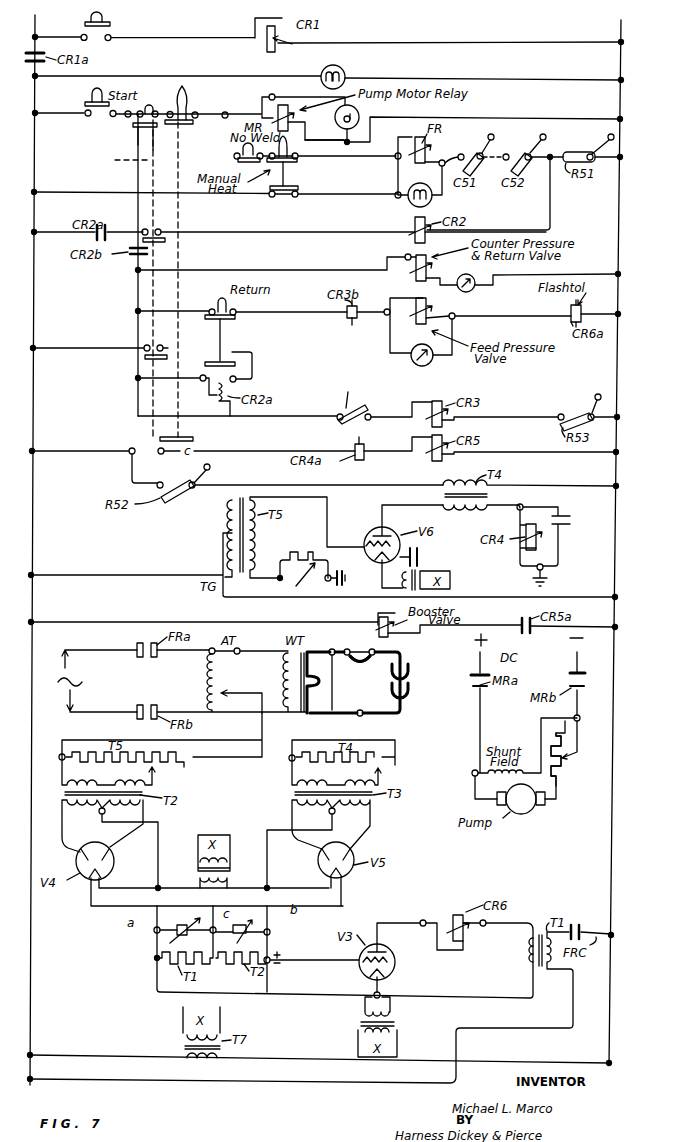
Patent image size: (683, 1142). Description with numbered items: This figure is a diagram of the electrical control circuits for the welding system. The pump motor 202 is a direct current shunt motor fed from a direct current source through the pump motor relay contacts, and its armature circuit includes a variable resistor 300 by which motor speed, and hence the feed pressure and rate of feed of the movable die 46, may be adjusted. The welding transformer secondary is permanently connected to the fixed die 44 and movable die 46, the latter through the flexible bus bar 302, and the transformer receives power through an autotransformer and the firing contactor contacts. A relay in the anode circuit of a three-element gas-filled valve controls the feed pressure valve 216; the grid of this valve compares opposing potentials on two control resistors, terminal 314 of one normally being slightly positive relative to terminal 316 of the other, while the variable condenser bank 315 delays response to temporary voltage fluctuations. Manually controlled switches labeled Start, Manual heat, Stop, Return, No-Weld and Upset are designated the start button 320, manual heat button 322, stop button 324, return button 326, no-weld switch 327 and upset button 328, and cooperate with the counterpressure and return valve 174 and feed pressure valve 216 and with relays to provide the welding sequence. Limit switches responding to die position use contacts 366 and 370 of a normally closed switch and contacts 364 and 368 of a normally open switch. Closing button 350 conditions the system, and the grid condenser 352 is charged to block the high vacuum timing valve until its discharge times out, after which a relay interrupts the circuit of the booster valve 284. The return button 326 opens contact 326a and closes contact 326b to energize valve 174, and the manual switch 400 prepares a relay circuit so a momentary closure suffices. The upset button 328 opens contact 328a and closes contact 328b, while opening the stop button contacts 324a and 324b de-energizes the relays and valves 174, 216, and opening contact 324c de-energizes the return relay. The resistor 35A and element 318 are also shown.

The button 350 is at (110, 25).
The start button 320 is at (85, 104).
The contact of stop button 324a is at (135, 125).
The upset button 328 is at (178, 100).
The stop button 324 is at (150, 176).
The no-weld switch 327 is at (290, 150).
The manual heat button 322 is at (286, 180).
The contact of upset button 328a is at (279, 158).
The contact of limit switch RS1 366 is at (592, 150).
The contact of limit switch RS1 370 is at (566, 166).
The contact of stop button 324b is at (160, 232).
The counterpressure and return valve 174 is at (411, 275).
The feed pressure valve 216 is at (413, 318).
The contact of return button 326a is at (209, 318).
The return button 326 is at (222, 331).
The contact of return button 326b is at (238, 366).
The contact of stop button 324c is at (147, 358).
The manual switch 400 is at (349, 400).
The contact of upset button 328b is at (160, 439).
The contact of limit switch RS2 368 is at (172, 470).
The contact of limit switch RS2 364 is at (176, 500).
The grid condenser 352 is at (279, 578).
The variable resistor 35A is at (311, 552).
The booster valve 284 is at (378, 619).
The flexible bus bar 302 is at (370, 652).
The movable die 46 is at (410, 670).
The fixed die 44 is at (410, 689).
The variable resistor 300 is at (562, 777).
The pump motor 202 is at (526, 817).
The variable condenser bank 315 is at (268, 931).
The terminal of resistor r2 316 is at (268, 959).
The terminal of resistor r1 314 is at (155, 958).
The resistor 318 is at (238, 964).